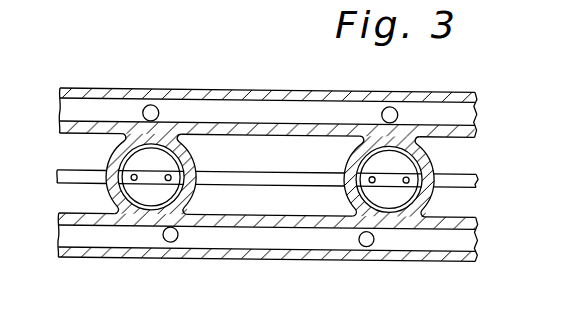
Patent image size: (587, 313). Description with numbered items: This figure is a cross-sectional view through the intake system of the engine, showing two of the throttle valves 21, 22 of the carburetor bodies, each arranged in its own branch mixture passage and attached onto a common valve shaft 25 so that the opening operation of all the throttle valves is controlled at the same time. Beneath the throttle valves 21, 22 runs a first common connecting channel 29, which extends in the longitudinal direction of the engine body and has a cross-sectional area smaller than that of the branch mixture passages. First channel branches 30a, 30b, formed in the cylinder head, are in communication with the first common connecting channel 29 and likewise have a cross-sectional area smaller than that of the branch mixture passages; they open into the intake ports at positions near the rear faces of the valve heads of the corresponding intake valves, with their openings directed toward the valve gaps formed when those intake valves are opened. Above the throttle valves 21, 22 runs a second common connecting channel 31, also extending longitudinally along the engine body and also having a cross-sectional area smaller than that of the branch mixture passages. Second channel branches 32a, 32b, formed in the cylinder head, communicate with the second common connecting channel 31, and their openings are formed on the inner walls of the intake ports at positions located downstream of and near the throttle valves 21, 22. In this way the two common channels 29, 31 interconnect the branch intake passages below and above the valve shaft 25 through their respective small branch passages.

The throttle valve 21 is at (372, 162).
The throttle valve 22 is at (133, 161).
The common valve shaft 25 is at (453, 174).
The first common connecting channel 29 is at (112, 239).
The first channel branch 30a is at (370, 244).
The first channel branch 30b is at (170, 241).
The second common connecting channel 31 is at (98, 107).
The second channel branch 32a is at (391, 104).
The second channel branch 32b is at (151, 104).